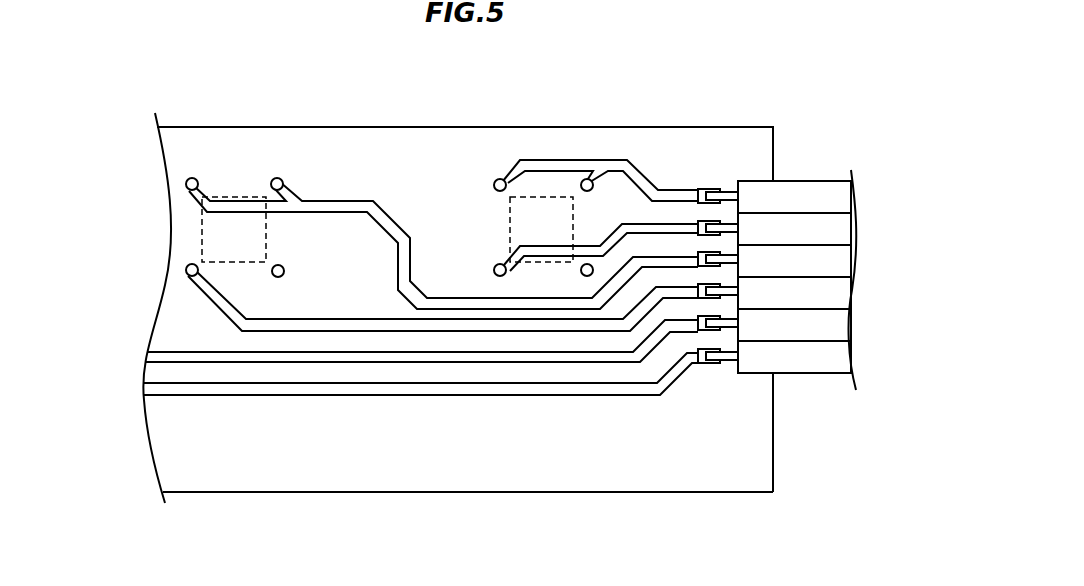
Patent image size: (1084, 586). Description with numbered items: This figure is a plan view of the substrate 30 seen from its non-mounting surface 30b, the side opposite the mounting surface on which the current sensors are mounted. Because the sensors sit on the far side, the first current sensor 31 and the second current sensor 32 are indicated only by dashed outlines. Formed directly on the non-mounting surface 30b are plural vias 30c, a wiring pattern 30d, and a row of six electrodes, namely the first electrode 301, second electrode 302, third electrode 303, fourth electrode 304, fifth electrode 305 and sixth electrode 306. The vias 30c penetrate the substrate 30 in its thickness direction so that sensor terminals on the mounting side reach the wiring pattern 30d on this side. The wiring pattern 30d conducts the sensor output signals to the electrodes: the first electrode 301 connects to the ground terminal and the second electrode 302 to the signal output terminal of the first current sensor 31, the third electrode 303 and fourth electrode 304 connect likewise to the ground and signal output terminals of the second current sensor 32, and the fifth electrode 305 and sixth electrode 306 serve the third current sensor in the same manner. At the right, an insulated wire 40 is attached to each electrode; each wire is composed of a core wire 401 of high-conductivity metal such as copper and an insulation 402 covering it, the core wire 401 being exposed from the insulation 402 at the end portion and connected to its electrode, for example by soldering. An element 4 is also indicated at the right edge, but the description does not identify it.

The display device 4 is at (844, 159).
The substrate 30 is at (205, 127).
The non-mounting surface 30b is at (558, 482).
The vias 30c is at (189, 264).
The wiring pattern 30d is at (530, 390).
The first current sensor 31 is at (532, 197).
The second current sensor 32 is at (234, 197).
The insulated wire 40 is at (783, 242).
The core wire 401 is at (725, 194).
The insulation 402 is at (780, 193).
The first electrode 301 is at (716, 189).
The second electrode 302 is at (702, 221).
The third electrode 303 is at (704, 252).
The fourth electrode 304 is at (701, 298).
The fifth electrode 305 is at (703, 330).
The sixth electrode 306 is at (711, 363).